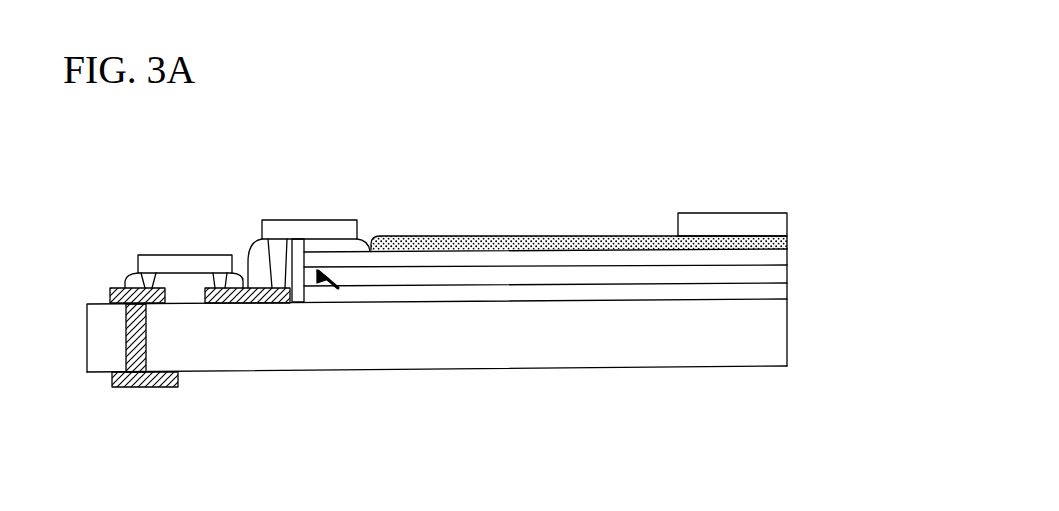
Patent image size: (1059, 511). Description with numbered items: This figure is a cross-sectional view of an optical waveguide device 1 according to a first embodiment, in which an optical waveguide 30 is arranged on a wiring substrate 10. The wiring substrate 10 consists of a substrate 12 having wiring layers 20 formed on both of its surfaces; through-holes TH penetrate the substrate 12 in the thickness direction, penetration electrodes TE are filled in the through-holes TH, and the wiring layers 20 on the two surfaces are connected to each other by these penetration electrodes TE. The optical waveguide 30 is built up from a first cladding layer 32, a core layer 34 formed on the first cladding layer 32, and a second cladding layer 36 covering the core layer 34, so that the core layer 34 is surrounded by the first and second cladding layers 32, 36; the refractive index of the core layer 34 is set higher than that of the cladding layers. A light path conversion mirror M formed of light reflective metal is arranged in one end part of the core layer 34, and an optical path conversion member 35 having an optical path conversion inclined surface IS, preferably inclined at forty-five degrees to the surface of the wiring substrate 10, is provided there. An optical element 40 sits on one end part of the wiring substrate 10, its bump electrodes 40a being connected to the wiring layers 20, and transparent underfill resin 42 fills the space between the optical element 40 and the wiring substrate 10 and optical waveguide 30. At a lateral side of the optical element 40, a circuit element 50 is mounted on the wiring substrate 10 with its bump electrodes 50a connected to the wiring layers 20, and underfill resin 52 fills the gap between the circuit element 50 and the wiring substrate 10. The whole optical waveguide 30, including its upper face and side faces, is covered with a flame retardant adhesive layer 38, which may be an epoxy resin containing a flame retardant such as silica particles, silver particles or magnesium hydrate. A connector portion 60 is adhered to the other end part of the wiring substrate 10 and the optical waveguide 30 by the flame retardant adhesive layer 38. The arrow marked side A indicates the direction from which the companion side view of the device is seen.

The optical waveguide device 1 is at (456, 143).
The wiring substrate 10 is at (793, 299).
The substrate 12 is at (745, 353).
The through-hole TH is at (127, 320).
The penetration electrode TE is at (135, 354).
The wiring layer 20 is at (113, 294).
The optical waveguide 30 is at (589, 273).
The first cladding layer 32 is at (566, 295).
The core layer 34 is at (786, 273).
The second cladding layer 36 is at (786, 252).
The flame retardant adhesive layer 38 is at (569, 237).
The optical element 40 is at (305, 228).
The bump electrode 40a is at (279, 252).
The transparent underfill resin 42 is at (328, 250).
The circuit element 50 is at (173, 262).
The bump electrode 50a is at (147, 280).
The underfill resin 52 is at (188, 281).
The connector portion 60 is at (720, 223).
The light path conversion mirror M is at (335, 268).
The optical path conversion inclined surface IS is at (335, 268).
The optical path conversion member 35 is at (343, 216).
The side A is at (849, 301).